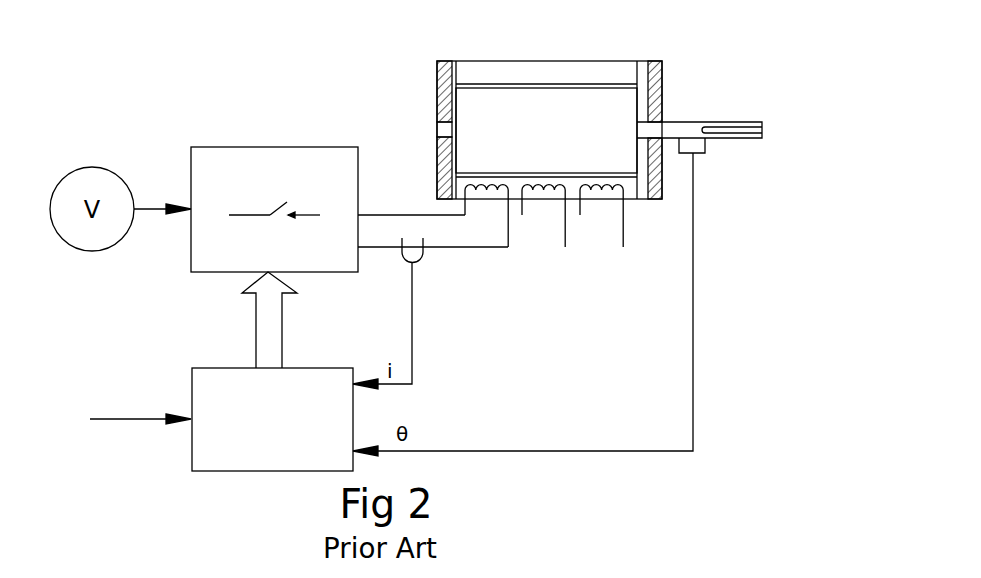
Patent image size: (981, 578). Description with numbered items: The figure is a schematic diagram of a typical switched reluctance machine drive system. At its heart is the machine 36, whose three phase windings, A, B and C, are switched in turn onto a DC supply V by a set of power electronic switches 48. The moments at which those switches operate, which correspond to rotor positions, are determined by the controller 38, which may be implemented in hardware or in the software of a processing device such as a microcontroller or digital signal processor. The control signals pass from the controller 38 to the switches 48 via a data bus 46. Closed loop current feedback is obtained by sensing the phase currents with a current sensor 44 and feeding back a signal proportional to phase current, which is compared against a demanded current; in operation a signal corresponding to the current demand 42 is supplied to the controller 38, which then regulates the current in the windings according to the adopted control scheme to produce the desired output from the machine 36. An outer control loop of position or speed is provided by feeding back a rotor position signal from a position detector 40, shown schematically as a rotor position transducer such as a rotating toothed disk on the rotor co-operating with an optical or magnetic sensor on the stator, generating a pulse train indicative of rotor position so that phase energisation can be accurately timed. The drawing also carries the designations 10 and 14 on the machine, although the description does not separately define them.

The linear motor / actuator 10 is at (485, 60).
The machine 36 is at (635, 50).
The mover / armature with output rod 14 is at (602, 108).
The position detector 40 is at (703, 150).
The power electronic switches 48 is at (278, 145).
The current sensor 44 is at (423, 258).
The controller 38 is at (223, 367).
The data bus 46 is at (283, 327).
The current demand 42 is at (125, 421).